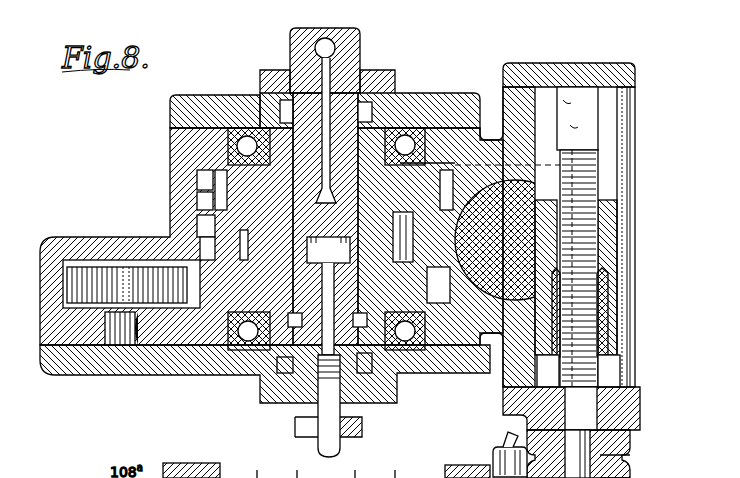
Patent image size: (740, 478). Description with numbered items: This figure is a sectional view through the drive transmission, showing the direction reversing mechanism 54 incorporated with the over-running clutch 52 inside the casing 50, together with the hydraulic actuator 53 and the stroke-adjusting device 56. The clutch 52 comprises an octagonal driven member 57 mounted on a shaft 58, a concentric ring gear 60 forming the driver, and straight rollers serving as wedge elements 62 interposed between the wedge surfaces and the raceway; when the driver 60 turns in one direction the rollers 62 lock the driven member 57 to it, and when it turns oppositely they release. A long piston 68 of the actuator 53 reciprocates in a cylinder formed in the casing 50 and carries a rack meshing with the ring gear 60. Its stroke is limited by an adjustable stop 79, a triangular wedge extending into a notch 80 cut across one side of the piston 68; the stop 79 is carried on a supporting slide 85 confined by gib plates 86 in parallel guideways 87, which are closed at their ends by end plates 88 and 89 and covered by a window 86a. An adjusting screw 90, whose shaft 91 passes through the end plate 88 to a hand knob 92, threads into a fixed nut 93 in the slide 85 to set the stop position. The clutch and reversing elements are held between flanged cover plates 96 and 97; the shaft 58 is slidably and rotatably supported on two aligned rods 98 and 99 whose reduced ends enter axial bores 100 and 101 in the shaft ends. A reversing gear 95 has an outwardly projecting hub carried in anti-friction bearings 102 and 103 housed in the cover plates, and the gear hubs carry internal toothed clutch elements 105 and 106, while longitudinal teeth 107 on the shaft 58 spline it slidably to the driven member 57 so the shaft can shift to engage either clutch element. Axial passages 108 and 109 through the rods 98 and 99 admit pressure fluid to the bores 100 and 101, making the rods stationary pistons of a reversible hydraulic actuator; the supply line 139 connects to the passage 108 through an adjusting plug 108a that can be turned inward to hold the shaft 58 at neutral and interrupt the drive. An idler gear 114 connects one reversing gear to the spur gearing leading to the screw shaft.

The casing 50 is at (62, 240).
The over-running clutch 52 is at (240, 240).
The reciprocatory hydraulic actuator 53 is at (492, 138).
The reversing mechanism 54 is at (250, 372).
The stroke-adjusting device 56 is at (642, 233).
The driven member 57 is at (213, 200).
The shaft 58 is at (205, 178).
The ring gear 60 is at (215, 262).
The wedge elements 62 is at (233, 220).
The piston 68 is at (497, 300).
The adjustable stop 79 is at (623, 197).
The notch 80 is at (565, 180).
The supporting slide 85 is at (613, 225).
The gib plates 86 is at (607, 125).
The window 86a is at (627, 320).
The guideways 87 is at (573, 107).
The end plate 88 is at (637, 405).
The end plate 89 is at (637, 72).
The adjusting screw 90 is at (603, 367).
The shaft 91 is at (635, 443).
The hand knob 92 is at (620, 468).
The fixed nut 93 is at (608, 273).
The gear 95 is at (217, 180).
The cover plate 96 is at (73, 374).
The cover plate 97 is at (172, 103).
The rod 98 is at (247, 360).
The rod 99 is at (350, 43).
The axial bore 100 is at (328, 250).
The axial bore 101 is at (362, 143).
The anti-friction bearing 102 is at (405, 340).
The anti-friction bearing 103 is at (250, 128).
The internal toothed clutch element 105 is at (256, 388).
The internal toothed clutch element 106 is at (273, 130).
The longitudinal teeth 107 is at (390, 375).
The axial passage 108 is at (340, 360).
The adjusting plug 108a is at (300, 430).
The axial passage 109 is at (327, 70).
The idler gear 114 is at (95, 280).
The supply line 139 is at (320, 447).